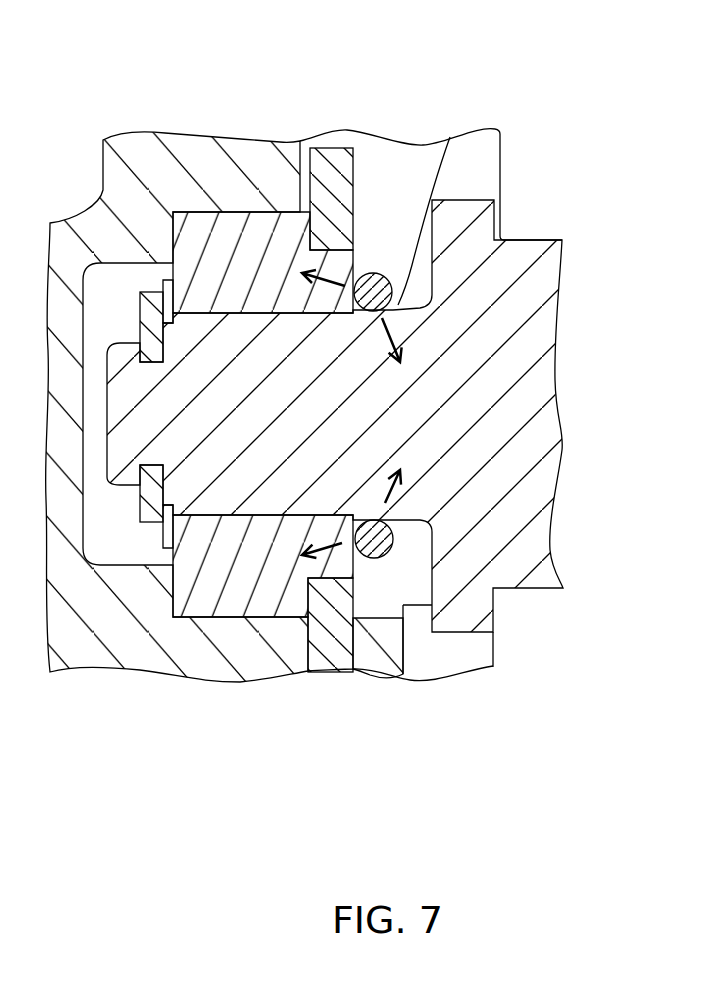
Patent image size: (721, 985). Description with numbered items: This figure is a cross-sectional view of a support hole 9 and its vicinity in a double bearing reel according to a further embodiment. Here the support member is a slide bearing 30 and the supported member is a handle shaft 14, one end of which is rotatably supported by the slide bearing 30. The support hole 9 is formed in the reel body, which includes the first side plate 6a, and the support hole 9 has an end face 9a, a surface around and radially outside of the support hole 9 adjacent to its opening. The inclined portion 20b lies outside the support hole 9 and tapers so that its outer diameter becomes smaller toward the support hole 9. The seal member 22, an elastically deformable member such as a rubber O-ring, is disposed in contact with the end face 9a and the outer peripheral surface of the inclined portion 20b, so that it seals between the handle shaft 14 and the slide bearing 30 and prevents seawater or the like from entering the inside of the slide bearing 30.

The first side plate 6a is at (135, 153).
The handle shaft 14 is at (543, 280).
The slide bearing 30 is at (242, 228).
The seal member 22 is at (372, 558).
The support hole 9 is at (347, 329).
The end face 9a is at (362, 270).
The inclined portion 20b is at (450, 137).